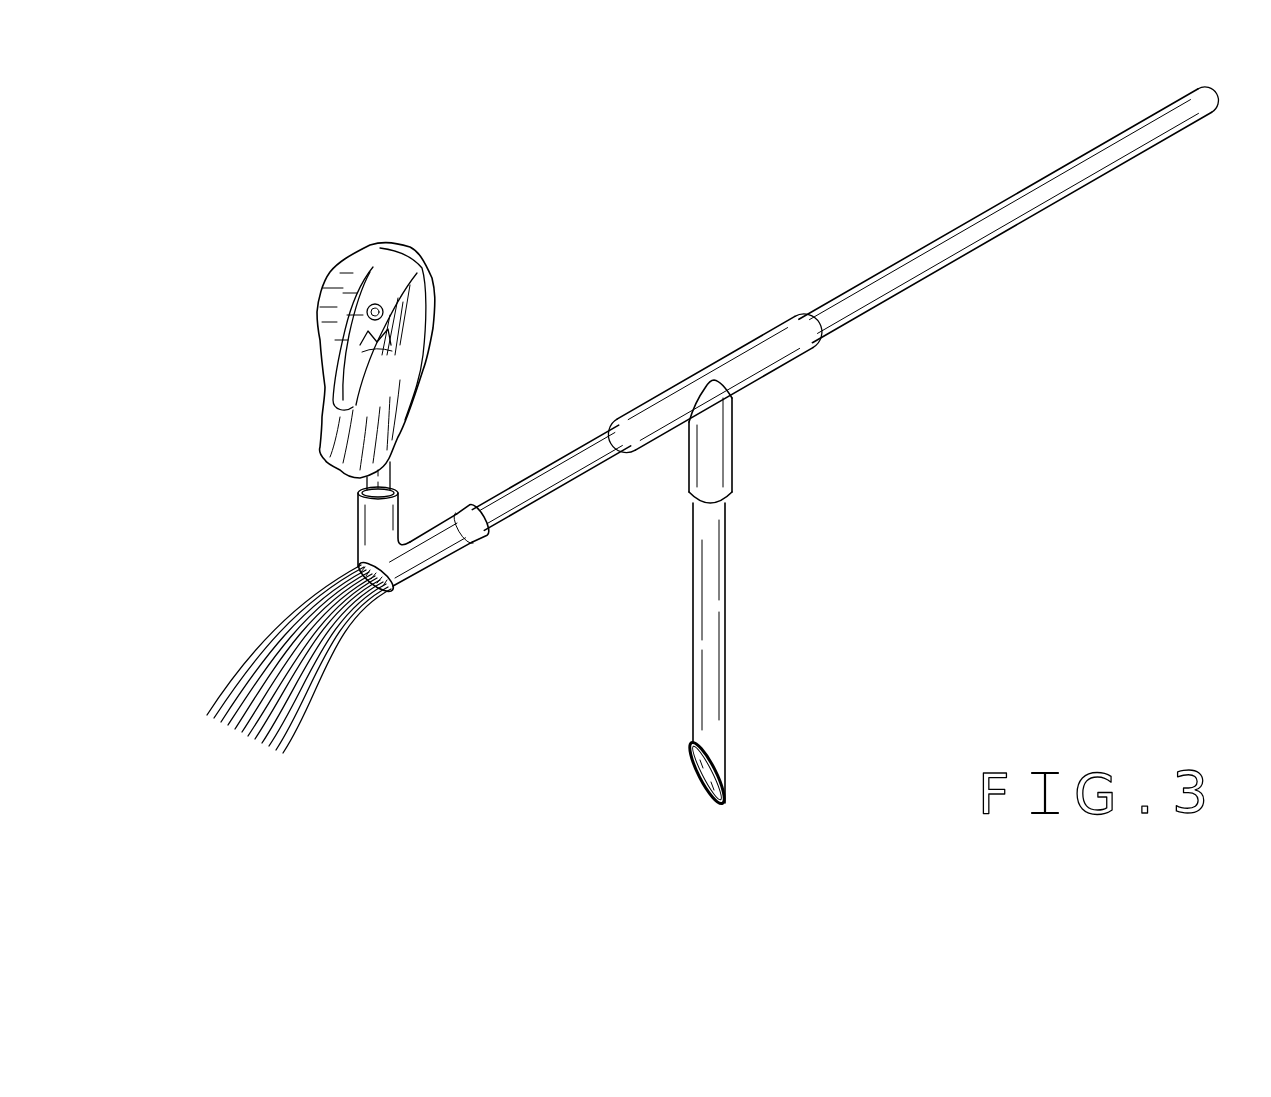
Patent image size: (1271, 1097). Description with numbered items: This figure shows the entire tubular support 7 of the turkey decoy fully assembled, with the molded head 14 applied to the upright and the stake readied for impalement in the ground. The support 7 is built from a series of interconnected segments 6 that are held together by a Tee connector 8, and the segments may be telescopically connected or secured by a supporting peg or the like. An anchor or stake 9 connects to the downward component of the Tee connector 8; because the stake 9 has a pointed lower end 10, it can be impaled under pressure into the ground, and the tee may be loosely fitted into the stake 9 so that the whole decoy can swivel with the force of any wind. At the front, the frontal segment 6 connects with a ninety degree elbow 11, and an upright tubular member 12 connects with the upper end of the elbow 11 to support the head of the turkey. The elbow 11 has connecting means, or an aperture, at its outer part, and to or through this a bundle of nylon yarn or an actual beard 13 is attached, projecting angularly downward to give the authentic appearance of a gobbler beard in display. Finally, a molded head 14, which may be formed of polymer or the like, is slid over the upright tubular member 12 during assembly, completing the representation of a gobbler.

The segment 6 is at (997, 235).
The support 7 is at (762, 258).
The Tee connector 8 is at (722, 432).
The stake 9 is at (717, 627).
The pointed lower end 10 is at (702, 776).
The elbow 11 is at (425, 564).
The upright tubular member 12 is at (392, 478).
The beard 13 is at (340, 618).
The molded head 14 is at (410, 240).